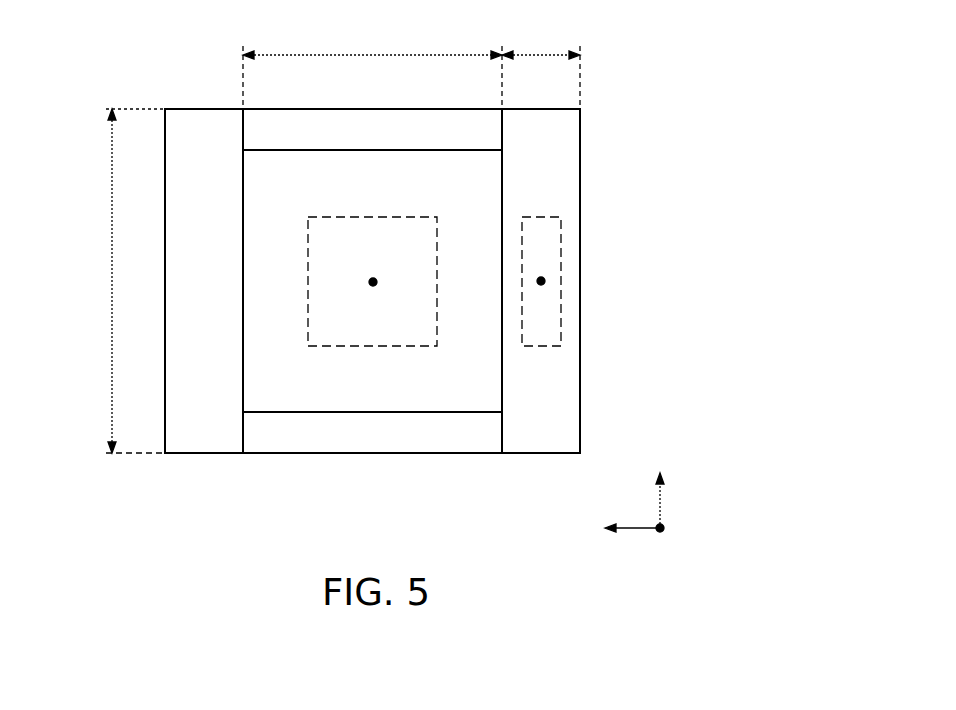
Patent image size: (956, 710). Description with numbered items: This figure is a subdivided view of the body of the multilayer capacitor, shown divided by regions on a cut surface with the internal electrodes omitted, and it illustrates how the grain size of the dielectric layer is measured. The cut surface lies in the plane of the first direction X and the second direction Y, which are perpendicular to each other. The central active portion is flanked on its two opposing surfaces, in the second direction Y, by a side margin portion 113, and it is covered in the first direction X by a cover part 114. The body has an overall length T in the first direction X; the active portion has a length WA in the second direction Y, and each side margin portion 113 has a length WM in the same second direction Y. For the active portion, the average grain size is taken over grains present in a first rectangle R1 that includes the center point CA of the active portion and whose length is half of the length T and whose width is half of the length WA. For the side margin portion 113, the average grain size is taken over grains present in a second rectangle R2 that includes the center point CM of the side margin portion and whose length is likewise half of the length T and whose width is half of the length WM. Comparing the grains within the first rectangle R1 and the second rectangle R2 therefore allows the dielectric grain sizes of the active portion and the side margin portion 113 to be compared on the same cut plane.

The side margin portion 113 is at (185, 171).
The cover part 114 is at (429, 126).
The first rectangle R1 is at (322, 348).
The second rectangle R2 is at (540, 348).
The center point of the active portion CA is at (387, 291).
The center point of the side margin portion CM is at (541, 281).
The length of the body in the first direction T is at (130, 281).
The length of the active portion in the second direction WA is at (372, 69).
The length of the side margin portion in the second direction WM is at (541, 69).
The first direction X is at (661, 487).
The second direction Y is at (622, 530).